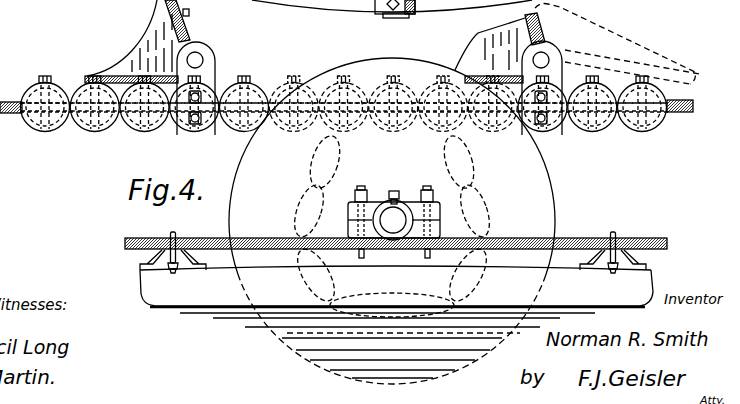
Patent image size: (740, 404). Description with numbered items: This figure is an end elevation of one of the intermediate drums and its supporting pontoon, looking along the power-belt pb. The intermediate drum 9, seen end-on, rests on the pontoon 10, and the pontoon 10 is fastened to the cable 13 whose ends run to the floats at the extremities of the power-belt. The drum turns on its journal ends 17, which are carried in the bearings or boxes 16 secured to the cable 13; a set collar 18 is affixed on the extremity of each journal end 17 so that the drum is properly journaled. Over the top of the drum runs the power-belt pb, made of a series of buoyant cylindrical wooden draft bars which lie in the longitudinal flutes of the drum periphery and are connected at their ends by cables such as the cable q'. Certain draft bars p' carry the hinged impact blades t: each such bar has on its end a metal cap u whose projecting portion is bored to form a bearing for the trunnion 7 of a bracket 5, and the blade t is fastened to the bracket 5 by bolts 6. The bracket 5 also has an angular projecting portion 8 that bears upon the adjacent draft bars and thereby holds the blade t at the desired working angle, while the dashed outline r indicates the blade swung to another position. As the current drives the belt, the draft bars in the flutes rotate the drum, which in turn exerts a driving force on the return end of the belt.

The bracket 5 is at (152, 18).
The bolt 6 is at (190, 12).
The trunnion 7 is at (203, 57).
The angular projecting portion 8 is at (88, 77).
The intermediate drum 9 is at (545, 192).
The pontoon 10 is at (139, 288).
The cable 13 is at (630, 238).
The bearing or box 16 is at (365, 3).
The journal end 17 is at (398, 14).
The set collar 18 is at (380, 14).
The impact blade t is at (192, 29).
The metal cap u is at (215, 63).
The draft bar p' is at (378, 124).
The power-belt pb is at (647, 133).
The cable q' is at (362, 118).
The alternate position outline r is at (617, 42).